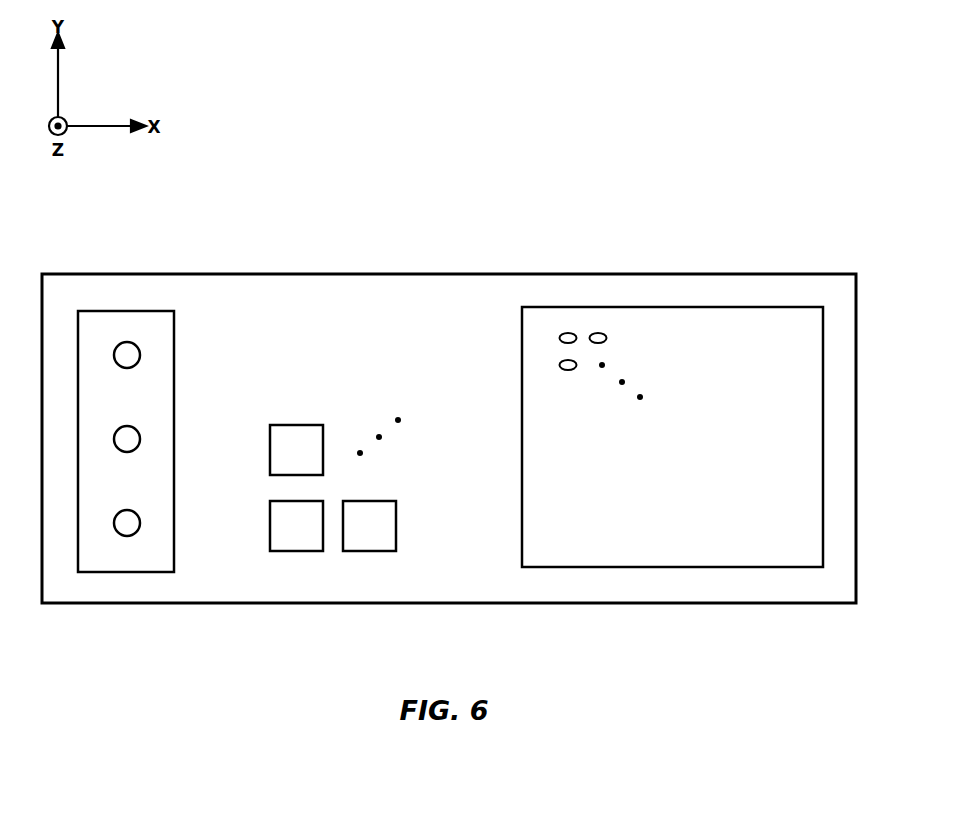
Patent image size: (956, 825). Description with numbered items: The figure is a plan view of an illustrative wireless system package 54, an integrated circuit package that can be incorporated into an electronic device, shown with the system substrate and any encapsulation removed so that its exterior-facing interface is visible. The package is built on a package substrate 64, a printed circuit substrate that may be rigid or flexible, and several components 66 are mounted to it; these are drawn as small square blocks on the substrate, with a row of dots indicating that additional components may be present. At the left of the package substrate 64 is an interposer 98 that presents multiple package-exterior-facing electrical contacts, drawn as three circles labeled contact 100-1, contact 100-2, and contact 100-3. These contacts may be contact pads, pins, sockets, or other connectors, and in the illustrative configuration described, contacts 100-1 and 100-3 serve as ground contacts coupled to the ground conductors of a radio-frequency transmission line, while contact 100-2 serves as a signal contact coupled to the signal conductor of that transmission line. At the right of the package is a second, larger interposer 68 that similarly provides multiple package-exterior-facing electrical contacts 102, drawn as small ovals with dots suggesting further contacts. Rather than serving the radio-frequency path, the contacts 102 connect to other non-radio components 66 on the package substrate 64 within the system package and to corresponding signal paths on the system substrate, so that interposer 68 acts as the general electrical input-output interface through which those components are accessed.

The system package 54 is at (797, 163).
The package substrate 64 is at (448, 285).
The components 66 is at (294, 432).
The interposer 68 is at (670, 307).
The interposer 98 is at (126, 311).
The contact 100-1 is at (140, 355).
The contact 100-2 is at (140, 439).
The contact 100-3 is at (140, 523).
The contacts 102 is at (568, 332).